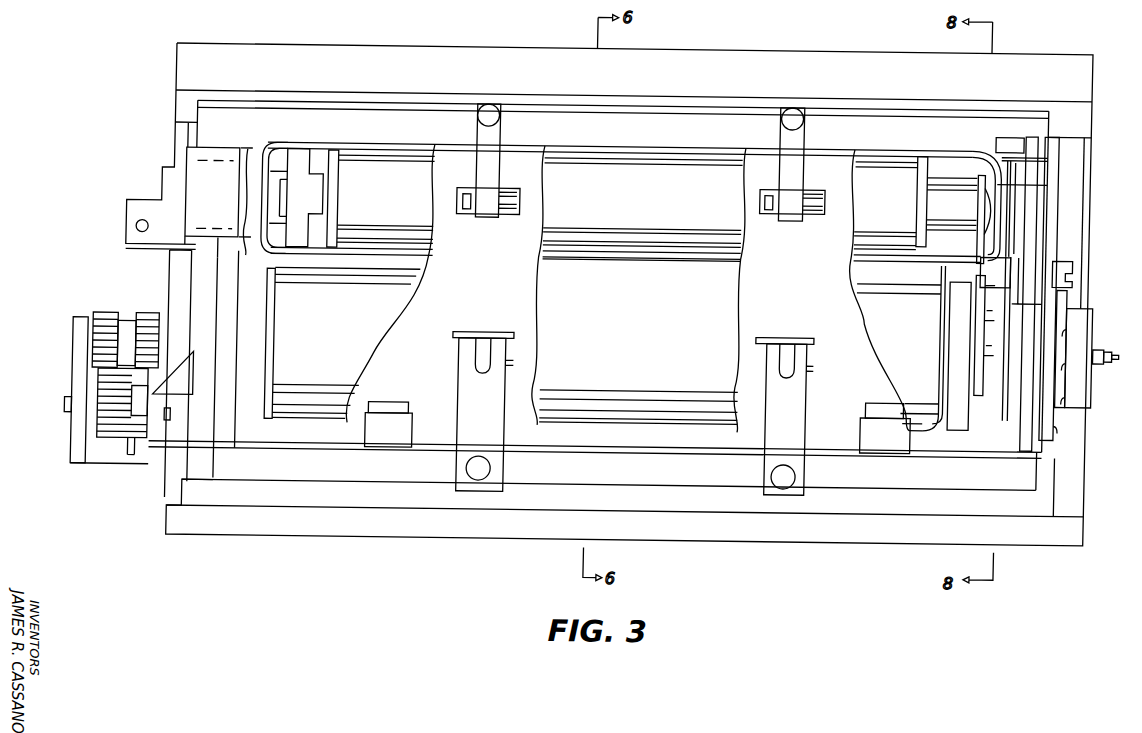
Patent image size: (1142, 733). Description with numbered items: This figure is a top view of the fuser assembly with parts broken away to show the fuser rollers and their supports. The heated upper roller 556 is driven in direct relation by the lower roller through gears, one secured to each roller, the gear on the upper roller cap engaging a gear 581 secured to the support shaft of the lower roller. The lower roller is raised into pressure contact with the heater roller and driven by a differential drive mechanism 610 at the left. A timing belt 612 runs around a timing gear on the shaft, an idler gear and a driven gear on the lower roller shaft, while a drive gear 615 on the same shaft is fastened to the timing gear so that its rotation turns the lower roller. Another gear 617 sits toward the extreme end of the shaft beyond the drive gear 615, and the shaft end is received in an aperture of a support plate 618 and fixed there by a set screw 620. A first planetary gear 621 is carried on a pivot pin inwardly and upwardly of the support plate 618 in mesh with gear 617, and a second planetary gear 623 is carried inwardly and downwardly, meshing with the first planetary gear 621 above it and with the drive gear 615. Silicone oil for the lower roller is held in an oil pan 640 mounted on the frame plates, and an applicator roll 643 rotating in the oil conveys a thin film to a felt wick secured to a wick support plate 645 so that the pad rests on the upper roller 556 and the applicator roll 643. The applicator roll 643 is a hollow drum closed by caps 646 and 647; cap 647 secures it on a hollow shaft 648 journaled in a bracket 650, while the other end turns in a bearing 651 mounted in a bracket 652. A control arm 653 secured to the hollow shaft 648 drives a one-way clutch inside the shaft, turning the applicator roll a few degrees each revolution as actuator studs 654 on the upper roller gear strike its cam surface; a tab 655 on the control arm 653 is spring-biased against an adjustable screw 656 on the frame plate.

The upper roller 556 is at (312, 423).
The gear 581 is at (968, 407).
The differential drive mechanism 610 is at (86, 501).
The timing belt 612 is at (168, 270).
The drive gear 615 is at (147, 308).
The gear 617 is at (103, 308).
The support plate 618 is at (78, 378).
The set screw 620 is at (80, 340).
The first planetary gear 621 is at (110, 438).
The second planetary gear 623 is at (143, 440).
The oil pan 640 is at (628, 142).
The applicator roll 643 is at (377, 167).
The wick support plate 645 is at (530, 162).
The cap 646 is at (341, 212).
The cap 647 is at (918, 210).
The hollow shaft 648 is at (950, 177).
The bracket 650 is at (1040, 186).
The bearing 651 is at (327, 165).
The bracket 652 is at (298, 152).
The control arm 653 is at (983, 252).
The actuator studs 654 is at (982, 358).
The tab 655 is at (1005, 255).
The adjustable screw 656 is at (1075, 263).